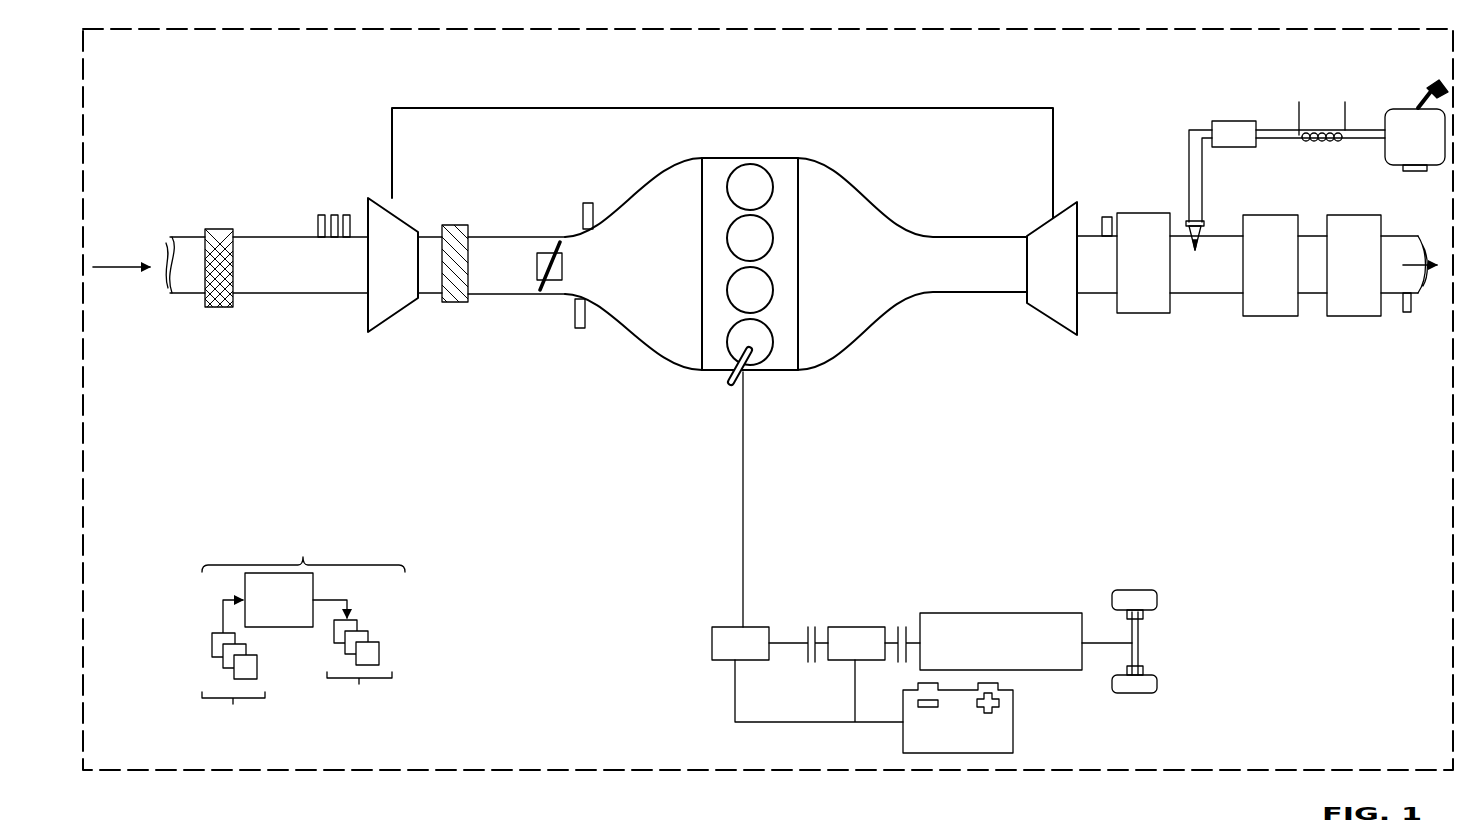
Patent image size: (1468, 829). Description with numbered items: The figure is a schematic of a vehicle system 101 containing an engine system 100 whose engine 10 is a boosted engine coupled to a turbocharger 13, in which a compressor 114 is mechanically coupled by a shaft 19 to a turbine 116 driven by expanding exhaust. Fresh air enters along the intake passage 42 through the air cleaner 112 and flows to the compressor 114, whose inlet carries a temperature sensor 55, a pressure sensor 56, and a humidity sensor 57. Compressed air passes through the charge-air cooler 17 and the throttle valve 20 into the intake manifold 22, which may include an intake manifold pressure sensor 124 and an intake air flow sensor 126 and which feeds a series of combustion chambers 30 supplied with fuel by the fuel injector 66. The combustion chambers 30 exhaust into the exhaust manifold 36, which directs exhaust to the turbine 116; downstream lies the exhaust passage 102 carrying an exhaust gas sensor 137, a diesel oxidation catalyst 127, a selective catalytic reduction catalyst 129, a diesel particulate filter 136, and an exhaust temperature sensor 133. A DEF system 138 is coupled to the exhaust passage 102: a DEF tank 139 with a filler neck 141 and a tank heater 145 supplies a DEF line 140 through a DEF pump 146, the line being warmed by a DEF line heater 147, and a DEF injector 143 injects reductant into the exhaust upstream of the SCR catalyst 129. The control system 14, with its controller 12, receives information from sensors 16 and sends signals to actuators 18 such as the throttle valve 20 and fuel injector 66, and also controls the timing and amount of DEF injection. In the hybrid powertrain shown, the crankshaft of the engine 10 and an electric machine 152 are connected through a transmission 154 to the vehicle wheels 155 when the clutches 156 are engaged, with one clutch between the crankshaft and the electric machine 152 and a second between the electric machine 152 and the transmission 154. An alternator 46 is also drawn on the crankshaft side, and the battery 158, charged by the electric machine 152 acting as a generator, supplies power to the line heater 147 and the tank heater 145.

The vehicle system 101 is at (938, 29).
The engine system 100 is at (1100, 62).
The engine 10 is at (796, 250).
The controller 12 is at (279, 600).
The turbocharger 13 is at (722, 218).
The control system 14 is at (307, 614).
The sensors 16 is at (239, 672).
The charge-air cooler 17 is at (460, 225).
The actuators 18 is at (362, 670).
The shaft 19 is at (700, 108).
The throttle valve 20 is at (565, 272).
The intake manifold 22 is at (633, 264).
The combustion chambers 30 is at (772, 180).
The exhaust manifold 36 is at (888, 142).
The intake passage 42 is at (170, 293).
The alternator 46 is at (712, 660).
The temperature sensor 55 is at (321, 214).
The pressure sensor 56 is at (334, 214).
The humidity sensor 57 is at (346, 214).
The fuel injector 66 is at (746, 387).
The exhaust passage 102 is at (1205, 293).
The air cleaner 112 is at (222, 228).
The compressor 114 is at (393, 265).
The turbine 116 is at (1052, 268).
The intake manifold pressure sensor 124 is at (583, 210).
The intake air flow sensor 126 is at (575, 312).
The diesel oxidation catalyst 127 is at (1135, 213).
The selective catalytic reduction catalyst 129 is at (1260, 215).
The exhaust temperature sensor 133 is at (1413, 305).
The diesel particulate filter 136 is at (1338, 215).
The exhaust gas sensor 137 is at (1106, 216).
The DEF system 138 is at (1317, 158).
The DEF tank 139 is at (1392, 109).
The DEF line 140 is at (1285, 141).
The filler neck 141 is at (1426, 84).
The DEF injector 143 is at (1210, 245).
The heater 145 is at (1410, 171).
The DEF pump 146 is at (1226, 121).
The DEF line heater 147 is at (1330, 142).
The electric machine 152 is at (845, 626).
The transmission 154 is at (1060, 670).
The vehicle wheels 155 is at (1112, 600).
The clutches 156 is at (806, 626).
The battery 158 is at (1013, 722).